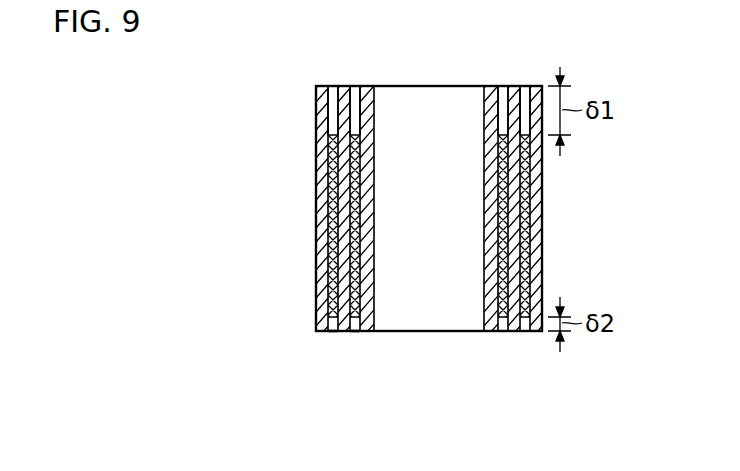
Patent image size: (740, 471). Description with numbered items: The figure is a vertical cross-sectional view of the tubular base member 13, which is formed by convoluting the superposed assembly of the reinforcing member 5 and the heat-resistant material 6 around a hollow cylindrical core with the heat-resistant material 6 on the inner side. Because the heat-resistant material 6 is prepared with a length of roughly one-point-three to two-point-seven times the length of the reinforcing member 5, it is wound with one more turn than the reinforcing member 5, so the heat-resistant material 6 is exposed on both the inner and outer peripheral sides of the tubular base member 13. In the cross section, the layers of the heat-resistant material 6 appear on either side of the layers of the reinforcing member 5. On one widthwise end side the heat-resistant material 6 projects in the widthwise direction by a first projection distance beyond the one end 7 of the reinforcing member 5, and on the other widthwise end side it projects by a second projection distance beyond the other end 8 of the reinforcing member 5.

The reinforcing member 5 is at (350, 212).
The heat-resistant material 6 is at (316, 137).
The one end of the reinforcing member 7 is at (329, 134).
The other end of the reinforcing member 8 is at (331, 331).
The tubular base member 13 is at (312, 315).